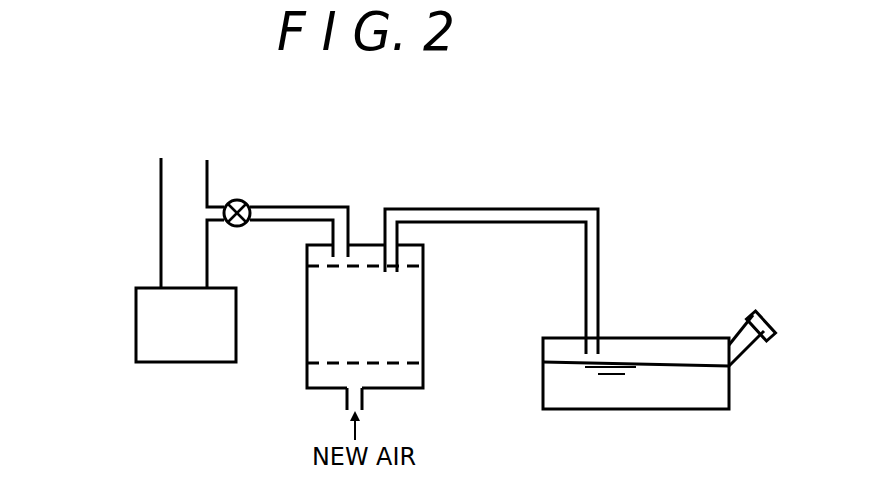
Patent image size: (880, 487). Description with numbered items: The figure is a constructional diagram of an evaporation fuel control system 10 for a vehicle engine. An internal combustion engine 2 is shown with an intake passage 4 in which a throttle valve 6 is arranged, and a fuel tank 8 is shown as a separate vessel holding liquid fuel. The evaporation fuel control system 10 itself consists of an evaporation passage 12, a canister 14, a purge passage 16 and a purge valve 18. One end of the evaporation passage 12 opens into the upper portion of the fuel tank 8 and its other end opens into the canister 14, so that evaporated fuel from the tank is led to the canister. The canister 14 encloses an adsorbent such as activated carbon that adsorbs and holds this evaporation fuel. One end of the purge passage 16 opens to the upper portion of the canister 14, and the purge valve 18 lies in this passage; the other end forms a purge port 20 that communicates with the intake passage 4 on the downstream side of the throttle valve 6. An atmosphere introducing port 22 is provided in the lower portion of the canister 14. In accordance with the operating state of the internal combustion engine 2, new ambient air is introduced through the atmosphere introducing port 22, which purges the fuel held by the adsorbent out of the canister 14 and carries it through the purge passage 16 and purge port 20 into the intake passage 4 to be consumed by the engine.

The internal combustion engine 2 is at (143, 316).
The intake passage 4 is at (170, 239).
The throttle valve 6 is at (203, 183).
The fuel tank 8 is at (659, 338).
The evaporation fuel control system 10 is at (584, 173).
The evaporation passage 12 is at (492, 209).
The canister 14 is at (425, 300).
The purge passage 16 is at (313, 207).
The purge valve 18 is at (238, 200).
The purge port 20 is at (205, 213).
The atmosphere introducing port 22 is at (363, 398).